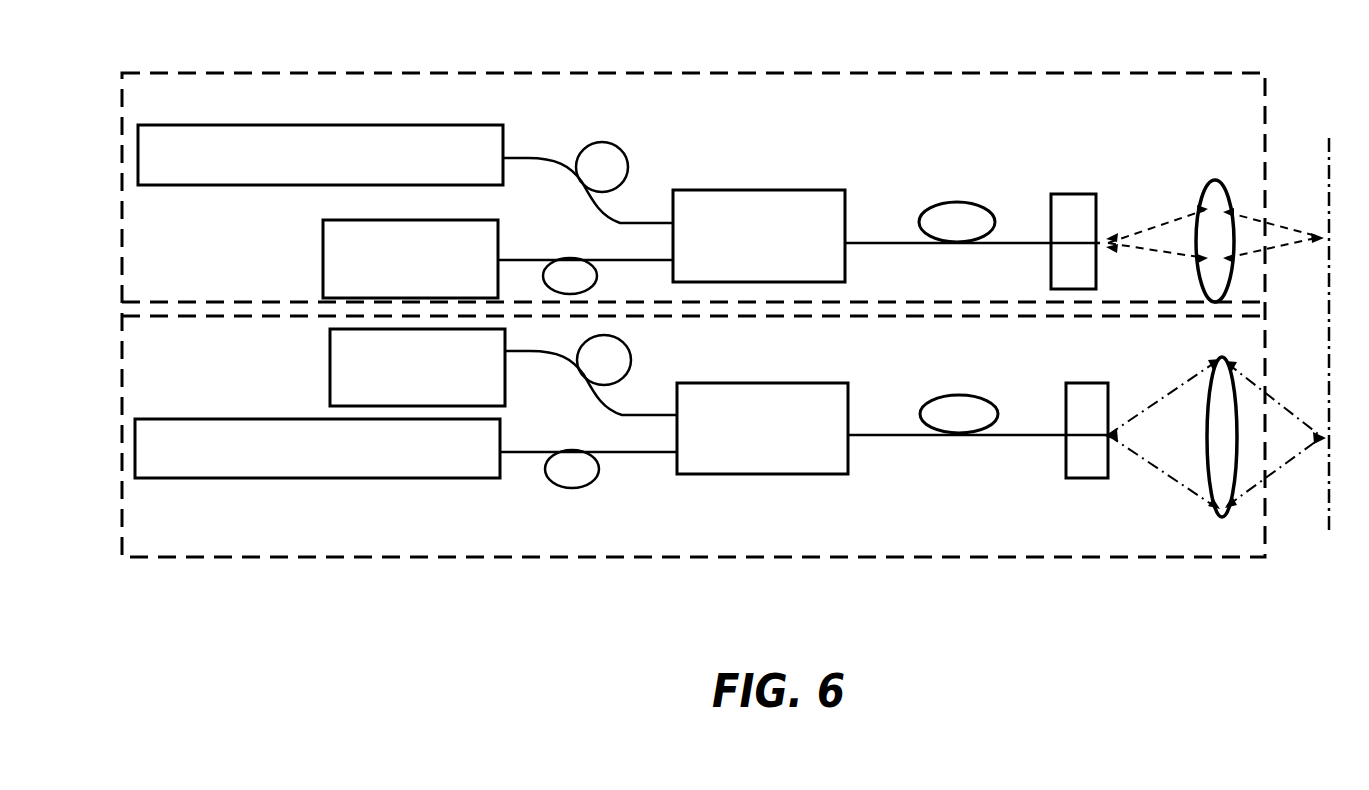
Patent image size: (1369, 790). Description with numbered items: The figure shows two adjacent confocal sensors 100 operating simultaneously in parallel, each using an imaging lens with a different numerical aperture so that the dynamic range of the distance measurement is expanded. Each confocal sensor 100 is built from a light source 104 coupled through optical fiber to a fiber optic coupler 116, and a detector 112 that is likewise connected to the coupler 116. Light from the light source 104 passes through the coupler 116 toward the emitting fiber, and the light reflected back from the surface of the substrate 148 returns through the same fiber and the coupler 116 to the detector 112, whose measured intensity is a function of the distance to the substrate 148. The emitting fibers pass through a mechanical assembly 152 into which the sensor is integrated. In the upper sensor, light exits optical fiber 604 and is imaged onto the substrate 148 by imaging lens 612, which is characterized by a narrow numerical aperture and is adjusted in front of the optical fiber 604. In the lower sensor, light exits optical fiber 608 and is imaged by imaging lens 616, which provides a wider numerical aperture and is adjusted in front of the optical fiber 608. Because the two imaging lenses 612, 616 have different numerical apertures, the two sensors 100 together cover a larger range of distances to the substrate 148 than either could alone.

The confocal sensor 100 is at (104, 185).
The light source 104 is at (342, 170).
The detector 112 is at (432, 275).
The fiber optic coupler 116 is at (782, 252).
The substrate 148 is at (1330, 138).
The mechanical assembly 152 is at (1073, 193).
The optical fiber 604 is at (948, 203).
The optical fiber 608 is at (958, 436).
The imaging lens 612 is at (1212, 180).
The imaging lens 616 is at (1221, 511).